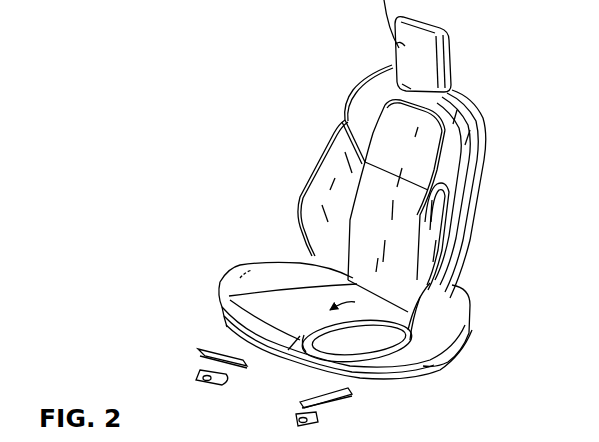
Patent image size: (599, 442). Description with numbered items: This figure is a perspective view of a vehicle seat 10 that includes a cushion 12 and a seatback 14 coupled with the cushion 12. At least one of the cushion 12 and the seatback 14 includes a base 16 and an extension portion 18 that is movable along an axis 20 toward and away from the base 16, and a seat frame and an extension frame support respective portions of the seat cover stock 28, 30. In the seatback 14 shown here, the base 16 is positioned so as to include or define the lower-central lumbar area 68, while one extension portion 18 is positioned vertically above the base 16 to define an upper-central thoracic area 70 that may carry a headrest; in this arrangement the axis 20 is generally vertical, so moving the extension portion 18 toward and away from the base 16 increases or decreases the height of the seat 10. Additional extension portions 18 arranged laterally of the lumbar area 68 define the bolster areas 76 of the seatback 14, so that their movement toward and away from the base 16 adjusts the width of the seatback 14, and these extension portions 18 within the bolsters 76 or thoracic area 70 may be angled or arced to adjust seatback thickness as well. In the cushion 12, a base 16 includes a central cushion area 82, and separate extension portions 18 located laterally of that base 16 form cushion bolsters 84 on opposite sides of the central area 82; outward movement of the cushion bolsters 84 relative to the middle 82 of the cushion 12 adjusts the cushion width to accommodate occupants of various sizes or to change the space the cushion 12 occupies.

The vehicle seat 10 is at (254, 98).
The cushion 12 is at (211, 321).
The seatback 14 is at (488, 172).
The base 16 is at (280, 337).
The extension portion 18 is at (428, 118).
The axis 20 is at (405, 162).
The seat cover stock 28 is at (355, 250).
The seat cover stock 30 is at (396, 120).
The lower-central lumbar area 68 is at (452, 300).
The upper-central thoracic area 70 is at (432, 148).
The bolster areas 76 is at (290, 200).
The central cushion area 82 is at (263, 340).
The cushion bolster area 84 is at (214, 290).